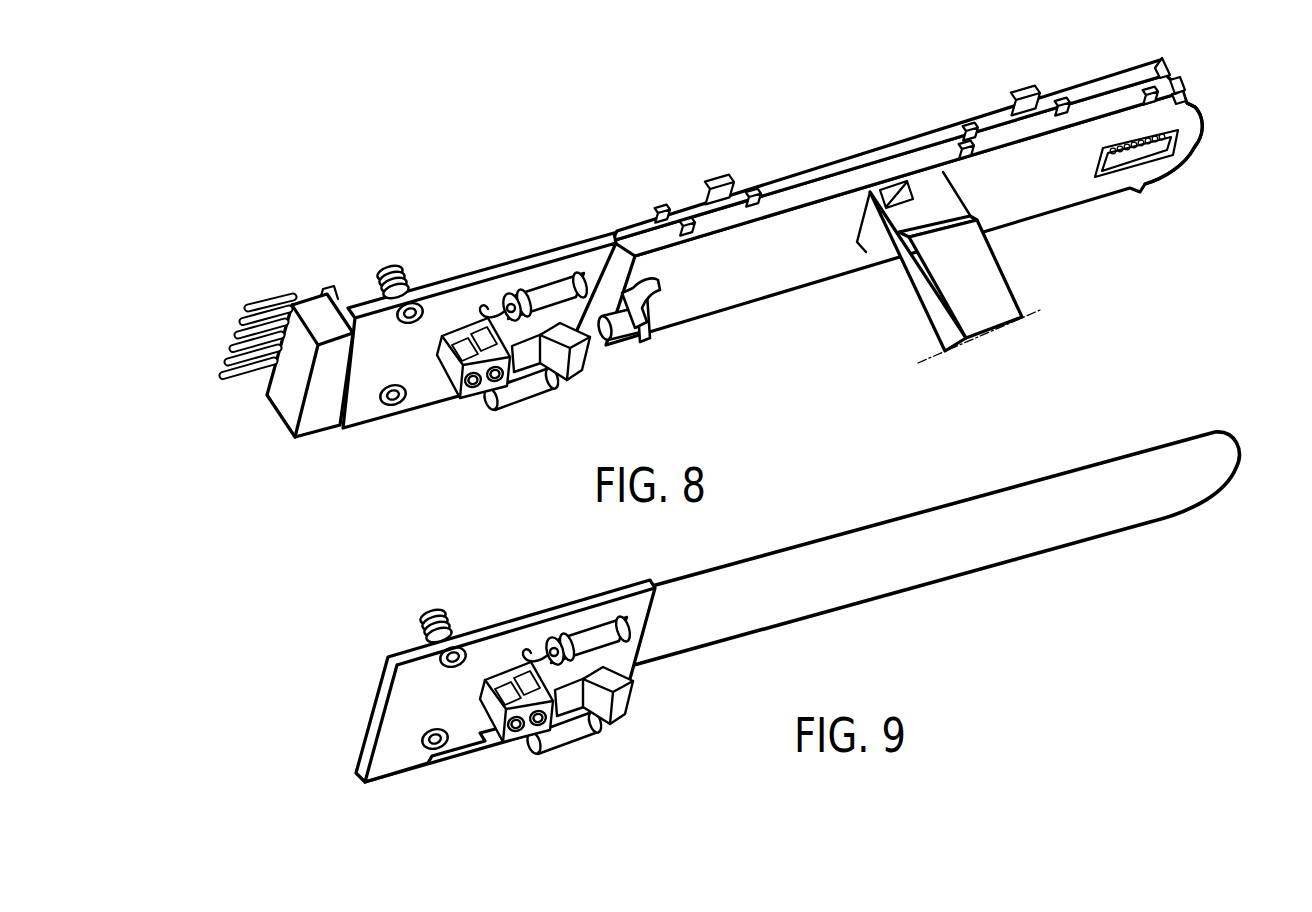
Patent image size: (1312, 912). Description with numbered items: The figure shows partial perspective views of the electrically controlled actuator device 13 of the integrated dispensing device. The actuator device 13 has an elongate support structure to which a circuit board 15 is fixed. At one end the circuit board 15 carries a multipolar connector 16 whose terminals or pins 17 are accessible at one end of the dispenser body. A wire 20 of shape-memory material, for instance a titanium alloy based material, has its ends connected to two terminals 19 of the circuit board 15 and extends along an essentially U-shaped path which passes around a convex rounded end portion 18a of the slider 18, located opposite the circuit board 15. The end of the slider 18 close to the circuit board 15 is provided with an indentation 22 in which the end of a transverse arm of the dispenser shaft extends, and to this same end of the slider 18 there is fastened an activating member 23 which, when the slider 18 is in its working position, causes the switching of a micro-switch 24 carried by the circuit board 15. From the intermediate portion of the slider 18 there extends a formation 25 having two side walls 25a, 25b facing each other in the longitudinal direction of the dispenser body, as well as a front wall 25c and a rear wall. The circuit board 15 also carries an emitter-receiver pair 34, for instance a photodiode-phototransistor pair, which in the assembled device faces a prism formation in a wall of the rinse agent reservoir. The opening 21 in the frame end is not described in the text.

In FIG. 8, the actuator device 13 is at (730, 264).
In FIG. 9, the actuator device 13 is at (799, 600).
In FIG. 8, the circuit board 15 is at (455, 300).
In FIG. 9, the circuit board 15 is at (464, 722).
In FIG. 8, the multipolar connector 16 is at (292, 400).
In FIG. 8, the pins 17 is at (231, 346).
In FIG. 8, the slider 18 is at (948, 254).
In FIG. 8, the convex rounded end portion 18a is at (1187, 143).
In FIG. 8, the terminals 19 is at (411, 304).
In FIG. 9, the terminals 19 is at (471, 654).
In FIG. 8, the wire 20 is at (775, 190).
In FIG. 9, the wire 20 is at (932, 507).
In FIG. 8, the connector opening 21 is at (1148, 146).
In FIG. 8, the indentation 22 is at (660, 306).
In FIG. 8, the activating member 23 is at (622, 343).
In FIG. 8, the micro-switch 24 is at (560, 372).
In FIG. 9, the micro-switch 24 is at (630, 700).
In FIG. 8, the formation 25 is at (951, 285).
In FIG. 8, the side wall 25a is at (932, 296).
In FIG. 8, the side wall 25b is at (1010, 276).
In FIG. 8, the front wall 25c is at (980, 295).
In FIG. 8, the emitter-receiver pair 34 is at (455, 374).
In FIG. 9, the emitter-receiver pair 34 is at (498, 738).